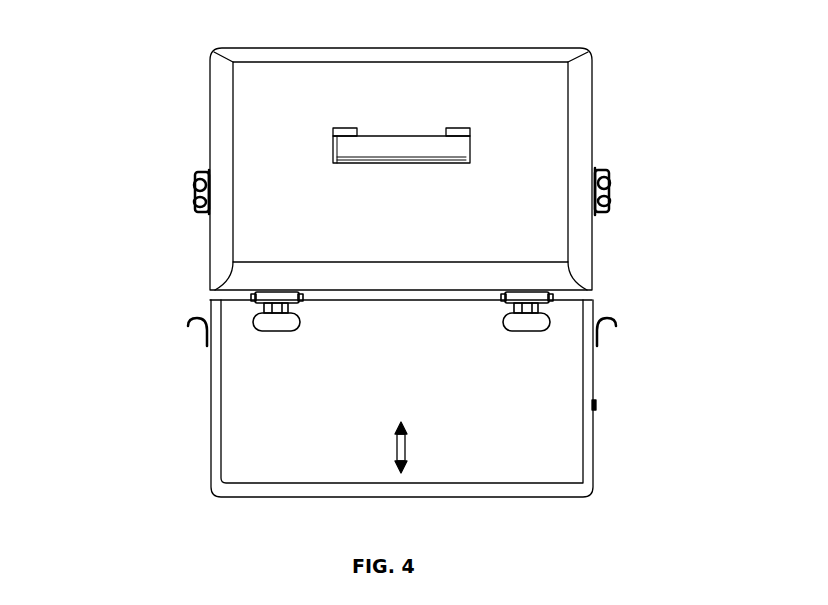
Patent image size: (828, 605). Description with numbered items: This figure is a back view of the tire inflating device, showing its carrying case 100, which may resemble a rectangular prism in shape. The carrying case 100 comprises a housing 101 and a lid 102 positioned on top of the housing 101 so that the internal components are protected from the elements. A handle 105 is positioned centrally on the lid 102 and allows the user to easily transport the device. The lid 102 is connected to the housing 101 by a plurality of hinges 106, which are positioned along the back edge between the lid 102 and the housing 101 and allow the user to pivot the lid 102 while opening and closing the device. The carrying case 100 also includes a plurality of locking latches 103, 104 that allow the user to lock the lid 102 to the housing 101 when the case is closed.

The carrying case 100 is at (424, 253).
The housing 101 is at (263, 428).
The lid 102 is at (412, 169).
The locking latch 103 is at (612, 190).
The locking latch 104 is at (613, 321).
The handle 105 is at (347, 143).
The hinge 106 is at (253, 306).